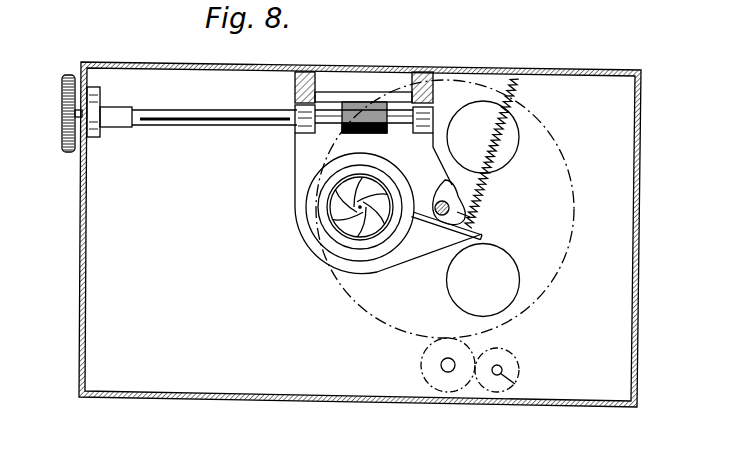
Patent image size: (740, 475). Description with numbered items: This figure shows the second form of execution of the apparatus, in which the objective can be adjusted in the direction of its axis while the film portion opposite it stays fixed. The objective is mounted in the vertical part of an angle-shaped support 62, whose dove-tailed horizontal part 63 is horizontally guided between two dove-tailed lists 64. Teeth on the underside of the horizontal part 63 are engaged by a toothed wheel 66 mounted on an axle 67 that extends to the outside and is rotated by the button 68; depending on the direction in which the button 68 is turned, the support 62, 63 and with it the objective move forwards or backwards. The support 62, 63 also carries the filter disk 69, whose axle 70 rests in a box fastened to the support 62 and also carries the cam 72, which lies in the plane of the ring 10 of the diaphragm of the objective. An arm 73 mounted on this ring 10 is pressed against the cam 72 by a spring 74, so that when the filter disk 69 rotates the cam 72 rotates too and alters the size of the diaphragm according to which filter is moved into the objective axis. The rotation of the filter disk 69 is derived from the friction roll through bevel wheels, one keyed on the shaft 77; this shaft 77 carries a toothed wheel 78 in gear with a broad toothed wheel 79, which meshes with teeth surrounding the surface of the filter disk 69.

The ring of the diaphragm 10 is at (317, 223).
The angle-shaped support 62 is at (305, 163).
The horizontal part of support 63 is at (347, 93).
The dove-tailed lists 64 is at (318, 96).
The toothed wheel 66 is at (367, 103).
The axle 67 is at (218, 112).
The button 68 is at (62, 95).
The filter disk 69 is at (548, 190).
The axle of the filter disk 70 is at (457, 212).
The cam 72 is at (443, 194).
The arm 73 is at (482, 237).
The spring 74 is at (515, 82).
The shaft 77 is at (547, 405).
The toothed wheel 78 is at (509, 360).
The broad toothed wheel 79 is at (450, 385).